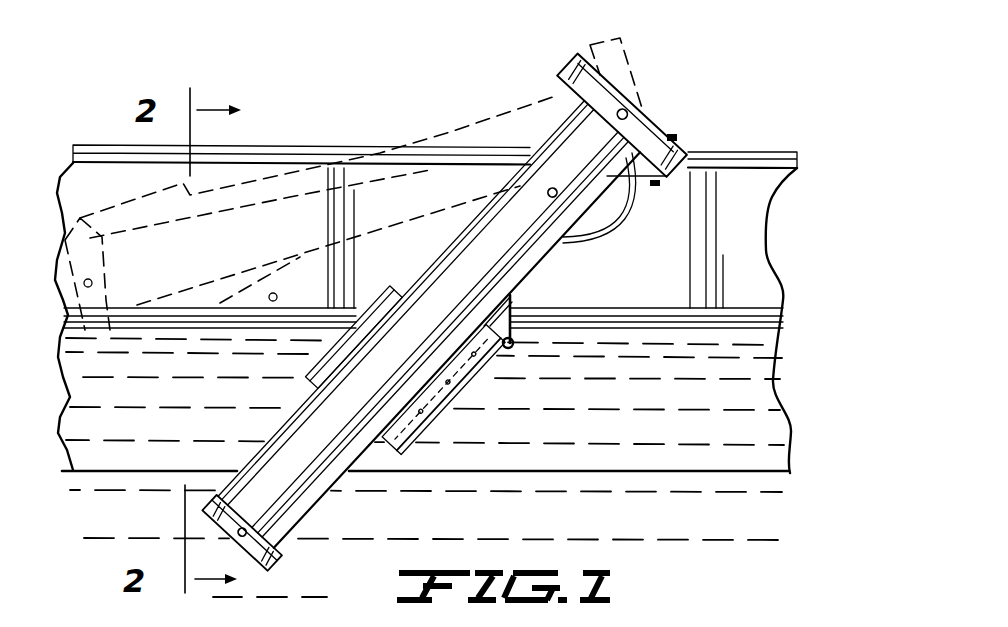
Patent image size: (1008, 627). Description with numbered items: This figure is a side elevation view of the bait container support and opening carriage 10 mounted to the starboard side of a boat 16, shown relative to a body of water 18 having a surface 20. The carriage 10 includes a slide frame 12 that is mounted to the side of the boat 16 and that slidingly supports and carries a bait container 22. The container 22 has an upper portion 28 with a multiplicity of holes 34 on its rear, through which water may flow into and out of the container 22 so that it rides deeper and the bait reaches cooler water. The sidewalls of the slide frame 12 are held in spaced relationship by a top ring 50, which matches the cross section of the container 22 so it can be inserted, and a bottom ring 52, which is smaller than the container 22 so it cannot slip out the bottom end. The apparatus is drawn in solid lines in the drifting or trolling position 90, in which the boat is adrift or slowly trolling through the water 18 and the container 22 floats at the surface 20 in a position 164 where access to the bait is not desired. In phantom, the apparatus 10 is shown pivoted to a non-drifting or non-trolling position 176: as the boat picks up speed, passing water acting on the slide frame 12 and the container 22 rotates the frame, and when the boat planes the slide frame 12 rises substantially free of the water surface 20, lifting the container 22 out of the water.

The bait container support and opening carriage 10 is at (458, 84).
The slide frame 12 is at (545, 272).
The boat 16 is at (768, 232).
The body of water 18 is at (638, 533).
The water surface 20 is at (752, 345).
The bait container 22 is at (405, 456).
The upper portion 28 is at (395, 282).
The holes 34 is at (470, 368).
The top ring 50 is at (566, 72).
The bottom ring 52 is at (282, 556).
The drifting or trolling position 90 is at (333, 512).
The position 164 is at (297, 390).
The non-drifting or non-trolling position 176 is at (294, 170).